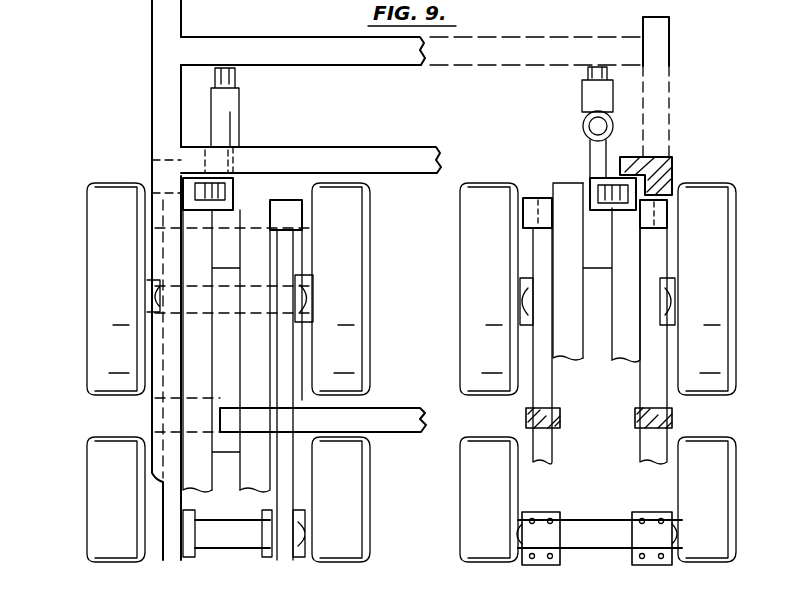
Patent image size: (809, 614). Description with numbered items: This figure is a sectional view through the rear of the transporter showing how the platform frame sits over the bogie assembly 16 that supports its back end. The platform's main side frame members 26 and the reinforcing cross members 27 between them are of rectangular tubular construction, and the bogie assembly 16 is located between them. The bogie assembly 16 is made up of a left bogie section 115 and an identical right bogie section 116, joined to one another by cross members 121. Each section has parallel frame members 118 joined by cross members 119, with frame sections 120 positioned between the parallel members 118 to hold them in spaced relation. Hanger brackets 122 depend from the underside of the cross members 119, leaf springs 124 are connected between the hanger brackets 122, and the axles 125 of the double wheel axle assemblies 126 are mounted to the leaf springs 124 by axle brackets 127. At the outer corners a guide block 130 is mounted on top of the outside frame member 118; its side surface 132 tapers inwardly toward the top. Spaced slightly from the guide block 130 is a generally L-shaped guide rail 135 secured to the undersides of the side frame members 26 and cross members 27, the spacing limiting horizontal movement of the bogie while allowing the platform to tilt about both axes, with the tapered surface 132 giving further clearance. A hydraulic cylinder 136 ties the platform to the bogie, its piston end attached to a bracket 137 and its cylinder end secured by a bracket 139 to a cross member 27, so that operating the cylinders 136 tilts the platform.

The bogie assembly 16 is at (460, 171).
The main side frame member 26 is at (152, 14).
The reinforcing cross member 27 is at (276, 45).
The left bogie section 115 is at (744, 180).
The right bogie section 116 is at (81, 169).
The parallel frame member 118 is at (563, 310).
The cross member 119 is at (522, 205).
The frame section 120 is at (230, 217).
The cross member 121 is at (408, 407).
The hanger bracket 122 is at (638, 418).
The leaf spring 124 is at (170, 494).
The axle 125 is at (213, 545).
The double wheel axle assembly 126 is at (100, 215).
The axle bracket 127 is at (303, 275).
The guide block 130 is at (213, 175).
The tapered side surface 132 is at (185, 190).
The guide rail 135 is at (192, 158).
The hydraulic cylinder 136 is at (242, 102).
The bracket 137 is at (584, 150).
The bracket 139 is at (222, 66).